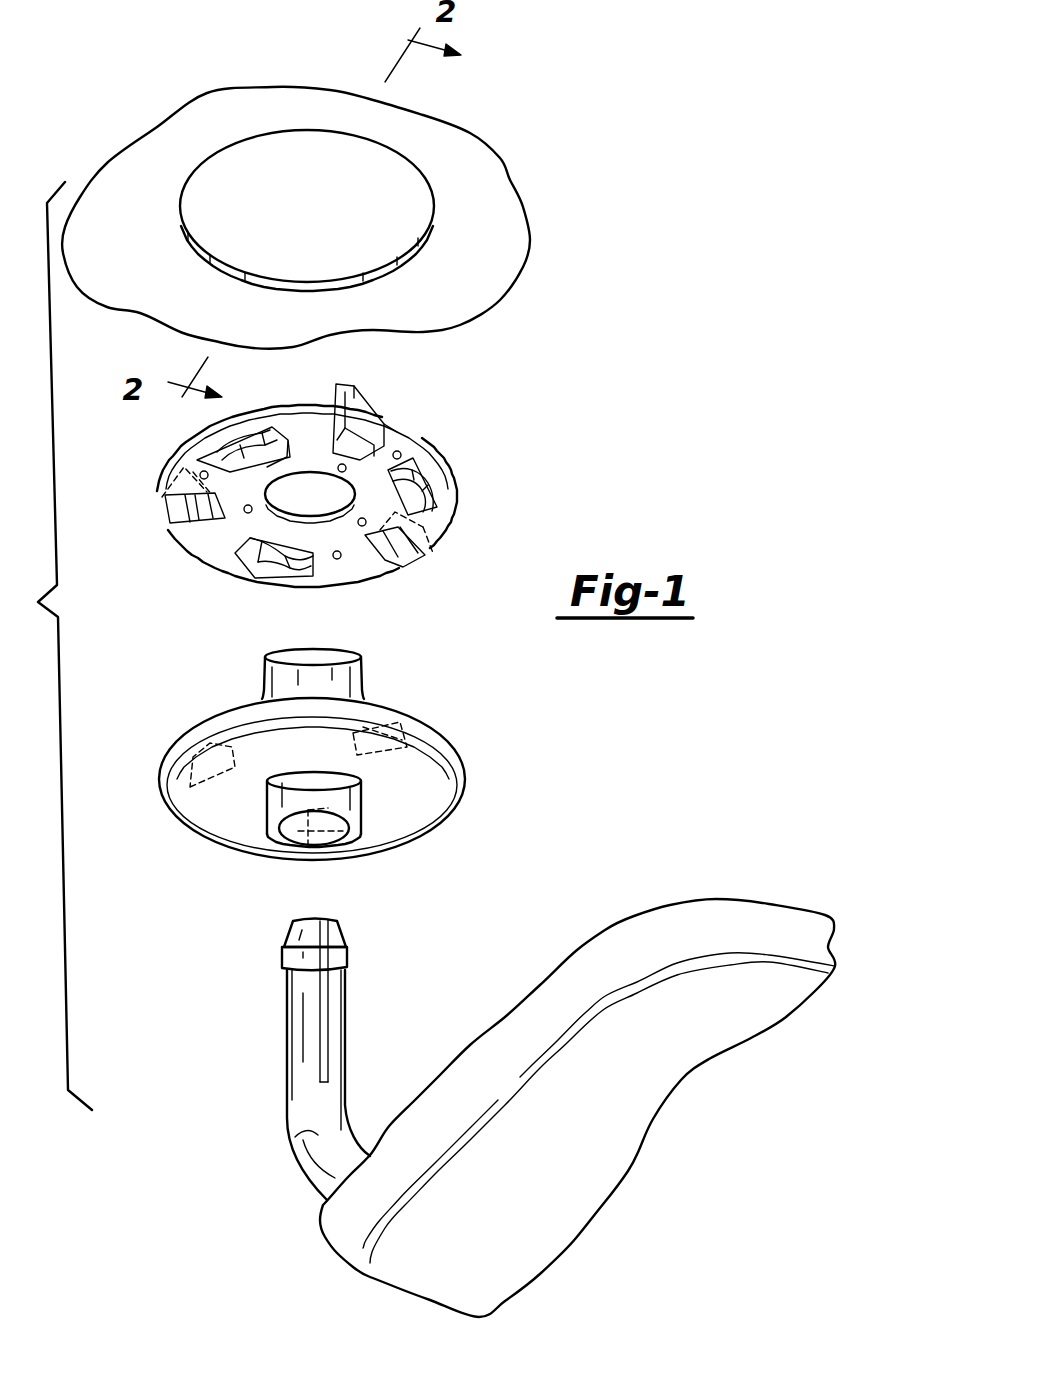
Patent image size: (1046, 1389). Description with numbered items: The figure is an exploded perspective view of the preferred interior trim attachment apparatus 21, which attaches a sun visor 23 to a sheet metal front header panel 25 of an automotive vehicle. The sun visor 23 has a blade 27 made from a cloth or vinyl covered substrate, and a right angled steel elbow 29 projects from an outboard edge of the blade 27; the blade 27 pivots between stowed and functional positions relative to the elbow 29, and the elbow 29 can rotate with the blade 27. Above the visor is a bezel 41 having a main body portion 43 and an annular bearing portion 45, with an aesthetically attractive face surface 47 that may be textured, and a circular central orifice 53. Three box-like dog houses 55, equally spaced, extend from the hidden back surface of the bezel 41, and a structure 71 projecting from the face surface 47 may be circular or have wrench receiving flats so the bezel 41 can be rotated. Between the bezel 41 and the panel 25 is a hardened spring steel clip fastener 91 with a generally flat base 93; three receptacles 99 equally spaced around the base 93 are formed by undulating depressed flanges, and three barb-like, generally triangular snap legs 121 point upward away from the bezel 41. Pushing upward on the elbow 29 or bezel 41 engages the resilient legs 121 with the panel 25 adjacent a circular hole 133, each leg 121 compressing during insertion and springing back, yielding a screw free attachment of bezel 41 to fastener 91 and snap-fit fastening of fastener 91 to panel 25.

The interior trim attachment apparatus 21 is at (577, 1077).
The sun visor 23 is at (628, 903).
The front header panel 25 is at (470, 163).
The blade 27 is at (604, 1157).
The right angled steel elbow 29 is at (295, 1135).
The bezel 41 is at (321, 748).
The main body portion 43 is at (397, 770).
The annular bearing portion 45 is at (320, 665).
The face surface 47 is at (222, 810).
The circular central orifice 53 is at (298, 840).
The dog houses 55 is at (205, 760).
The structure 71 is at (327, 787).
The clip fastener 91 is at (309, 479).
The base 93 is at (400, 440).
The receptacles 99 is at (243, 455).
The snap legs 121 is at (362, 400).
The circular hole 133 is at (362, 273).